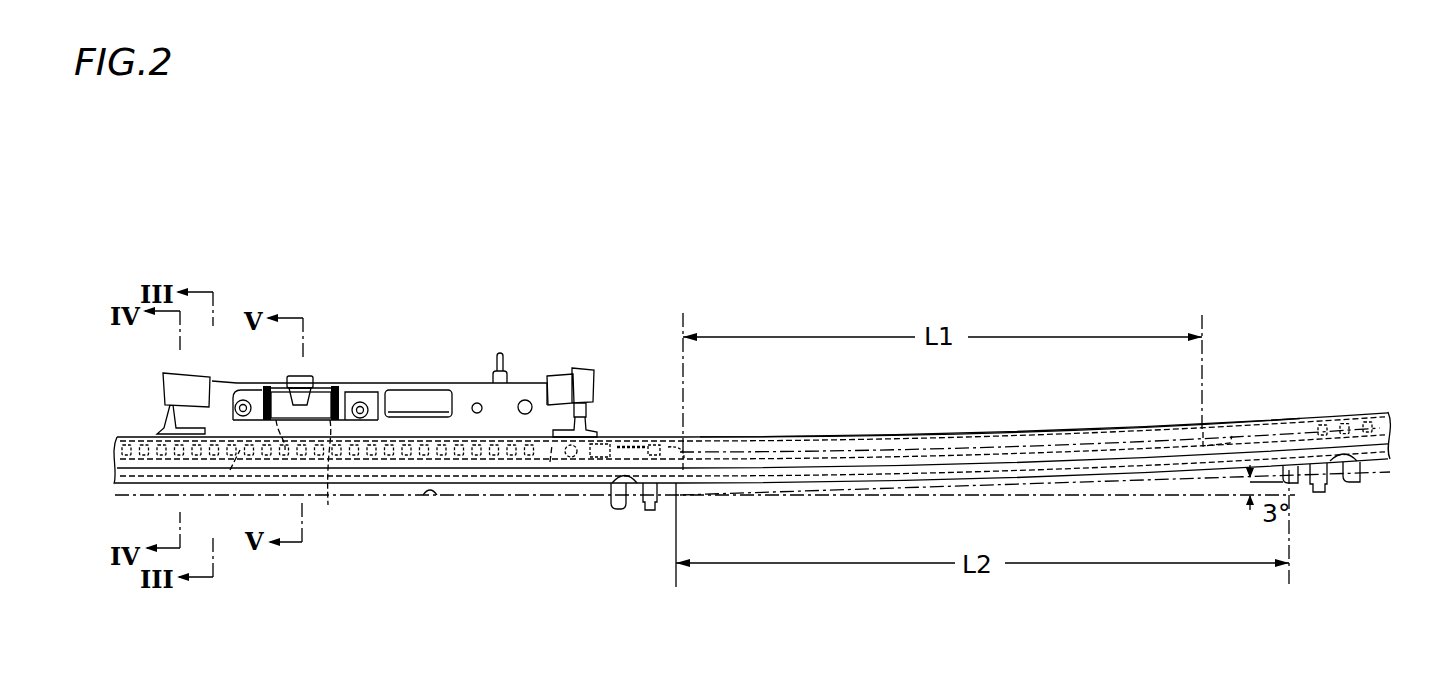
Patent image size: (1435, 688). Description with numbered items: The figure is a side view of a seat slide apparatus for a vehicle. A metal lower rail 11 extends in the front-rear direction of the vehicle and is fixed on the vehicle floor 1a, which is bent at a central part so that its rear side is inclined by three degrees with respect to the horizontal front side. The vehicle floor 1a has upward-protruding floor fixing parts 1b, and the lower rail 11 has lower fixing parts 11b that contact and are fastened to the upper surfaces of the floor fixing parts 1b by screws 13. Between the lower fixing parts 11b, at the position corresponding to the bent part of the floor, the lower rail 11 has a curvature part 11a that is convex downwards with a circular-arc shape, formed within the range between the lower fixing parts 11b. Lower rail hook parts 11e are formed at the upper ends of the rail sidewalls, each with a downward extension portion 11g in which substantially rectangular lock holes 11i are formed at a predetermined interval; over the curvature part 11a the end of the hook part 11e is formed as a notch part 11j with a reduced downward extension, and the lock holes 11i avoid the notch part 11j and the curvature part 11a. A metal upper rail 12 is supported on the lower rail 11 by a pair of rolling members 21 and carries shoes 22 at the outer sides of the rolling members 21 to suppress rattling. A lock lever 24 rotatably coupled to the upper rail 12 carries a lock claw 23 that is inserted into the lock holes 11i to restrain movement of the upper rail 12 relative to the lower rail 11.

The lower rail 11 is at (114, 437).
The curvature part 11a is at (897, 434).
The lower fixing part 11b is at (668, 486).
The lower rail hook part 11e is at (1232, 440).
The downward extension portion 11g is at (680, 456).
The lock hole 11i is at (1352, 413).
The notch part 11j is at (1005, 447).
The upper rail 12 is at (428, 383).
The screw 13 is at (645, 506).
The vehicle floor 1a is at (425, 505).
The floor fixing part 1b is at (611, 490).
The rolling member 21 is at (230, 470).
The shoe 22 is at (160, 437).
The lock claw 23 is at (300, 475).
The lock lever 24 is at (312, 378).